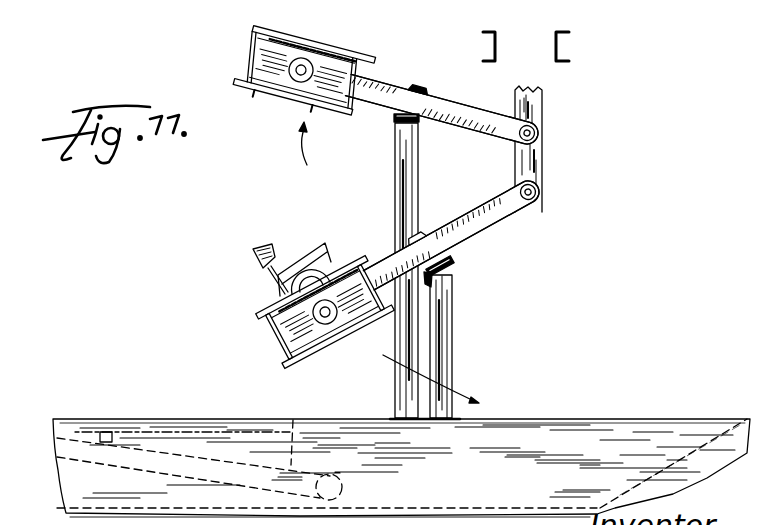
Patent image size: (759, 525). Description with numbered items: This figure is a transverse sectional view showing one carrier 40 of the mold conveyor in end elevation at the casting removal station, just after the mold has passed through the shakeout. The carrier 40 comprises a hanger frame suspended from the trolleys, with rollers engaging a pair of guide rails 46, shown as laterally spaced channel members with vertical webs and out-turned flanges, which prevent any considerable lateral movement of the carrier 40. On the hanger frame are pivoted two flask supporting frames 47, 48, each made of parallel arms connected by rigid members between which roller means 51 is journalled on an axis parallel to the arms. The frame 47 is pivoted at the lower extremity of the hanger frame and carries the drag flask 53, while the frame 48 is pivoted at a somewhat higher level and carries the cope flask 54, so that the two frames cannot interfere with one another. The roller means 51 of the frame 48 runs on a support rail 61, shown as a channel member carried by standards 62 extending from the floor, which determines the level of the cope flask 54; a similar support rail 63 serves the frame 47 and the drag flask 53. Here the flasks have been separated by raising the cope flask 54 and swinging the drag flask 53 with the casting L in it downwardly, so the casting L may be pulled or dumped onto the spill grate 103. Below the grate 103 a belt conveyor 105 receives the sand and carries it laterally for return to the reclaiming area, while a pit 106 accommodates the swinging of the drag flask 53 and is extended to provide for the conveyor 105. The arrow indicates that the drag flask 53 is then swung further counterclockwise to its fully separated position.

The carrier 40 is at (544, 110).
The guide rails 46 is at (553, 45).
The flask supporting frame 47 is at (480, 233).
The flask supporting frame 48 is at (441, 97).
The roller means 51 is at (409, 81).
The drag flask 53 is at (336, 341).
The cope flask 54 is at (293, 38).
The support rail 61 is at (391, 120).
The standards 62 is at (414, 184).
The support rail 63 is at (456, 266).
The spill grate 103 is at (190, 418).
The belt conveyor 105 is at (113, 432).
The pit 106 is at (652, 472).
The casting L is at (324, 243).